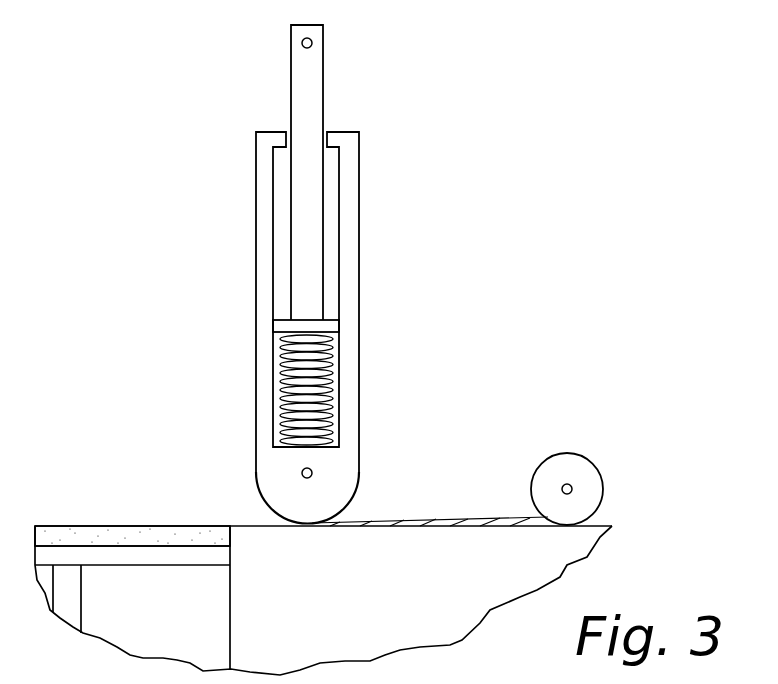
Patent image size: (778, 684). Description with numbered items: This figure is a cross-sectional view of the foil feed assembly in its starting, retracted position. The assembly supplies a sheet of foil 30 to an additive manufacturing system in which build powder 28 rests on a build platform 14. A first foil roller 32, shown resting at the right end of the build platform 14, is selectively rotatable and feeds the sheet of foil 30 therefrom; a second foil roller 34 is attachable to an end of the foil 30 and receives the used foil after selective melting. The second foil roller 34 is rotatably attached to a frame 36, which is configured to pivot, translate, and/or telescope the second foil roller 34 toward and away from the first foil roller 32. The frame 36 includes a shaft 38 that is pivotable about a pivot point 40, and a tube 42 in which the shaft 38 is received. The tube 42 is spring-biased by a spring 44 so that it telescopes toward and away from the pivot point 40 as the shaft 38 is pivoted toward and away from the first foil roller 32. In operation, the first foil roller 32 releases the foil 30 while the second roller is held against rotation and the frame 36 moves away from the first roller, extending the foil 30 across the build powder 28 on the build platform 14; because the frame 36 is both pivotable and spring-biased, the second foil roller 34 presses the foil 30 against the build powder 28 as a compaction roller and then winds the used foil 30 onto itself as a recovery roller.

The build platform 14 is at (172, 565).
The build powder 28 is at (153, 530).
The sheet of foil 30 is at (502, 522).
The first foil roller 32 is at (592, 470).
The second foil roller 34 is at (343, 495).
The frame 36 is at (200, 167).
The shaft 38 is at (314, 98).
The pivot point 40 is at (312, 43).
The tube 42 is at (359, 228).
The spring 44 is at (330, 400).